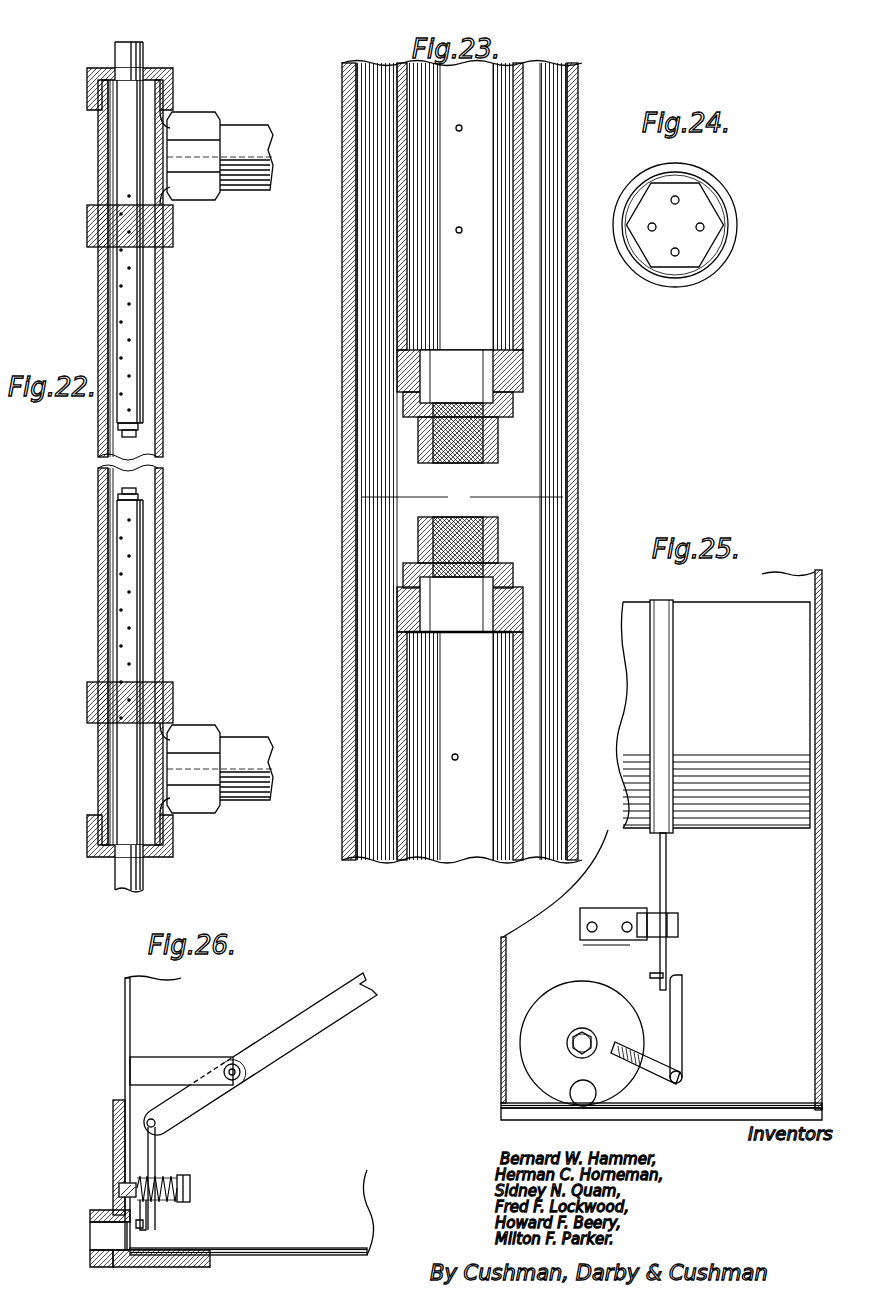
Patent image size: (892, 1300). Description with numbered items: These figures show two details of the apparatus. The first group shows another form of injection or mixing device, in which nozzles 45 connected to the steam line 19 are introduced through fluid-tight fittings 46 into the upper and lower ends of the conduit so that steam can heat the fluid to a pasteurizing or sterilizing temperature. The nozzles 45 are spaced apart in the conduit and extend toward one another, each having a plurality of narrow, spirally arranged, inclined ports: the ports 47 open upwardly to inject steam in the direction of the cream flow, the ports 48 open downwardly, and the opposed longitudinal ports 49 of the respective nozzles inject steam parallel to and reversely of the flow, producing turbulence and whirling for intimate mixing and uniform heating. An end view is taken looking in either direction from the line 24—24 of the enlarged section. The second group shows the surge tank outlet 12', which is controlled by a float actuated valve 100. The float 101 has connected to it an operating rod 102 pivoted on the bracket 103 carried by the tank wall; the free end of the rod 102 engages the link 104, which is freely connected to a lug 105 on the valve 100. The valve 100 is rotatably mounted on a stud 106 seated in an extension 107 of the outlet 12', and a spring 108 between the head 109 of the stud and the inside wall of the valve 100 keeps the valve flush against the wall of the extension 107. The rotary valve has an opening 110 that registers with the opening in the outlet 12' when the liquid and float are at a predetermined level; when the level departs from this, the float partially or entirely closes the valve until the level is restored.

In FIG. 22, the steam line 19 is at (125, 52).
In FIG. 22, the fluid-tight fittings 46 is at (168, 74).
In FIG. 22, the nozzles 45 is at (143, 497).
In FIG. 23, the nozzles 45 is at (525, 327).
In FIG. 24, the nozzles 45 is at (676, 287).
In FIG. 23, the ports 47 is at (520, 170).
In FIG. 23, the ports 48 is at (403, 213).
In FIG. 23, the longitudinal ports 49 is at (480, 517).
In FIG. 24, the longitudinal ports 49 is at (657, 229).
In FIG. 23, the line 24— 24 is at (463, 496).
In FIG. 25, the float 101 is at (713, 716).
In FIG. 25, the operating rod 102 is at (666, 856).
In FIG. 26, the operating rod 102 is at (287, 1046).
In FIG. 25, the bracket 103 is at (608, 916).
In FIG. 26, the bracket 103 is at (176, 1063).
In FIG. 25, the link 104 is at (672, 1028).
In FIG. 26, the link 104 is at (156, 1155).
In FIG. 25, the lug 105 is at (683, 1077).
In FIG. 25, the float actuated valve 100 is at (582, 1043).
In FIG. 26, the float actuated valve 100 is at (119, 1186).
In FIG. 25, the opening 110 is at (575, 1084).
In FIG. 26, the opening 110 is at (125, 1257).
In FIG. 26, the bolt or stud 106 is at (175, 1178).
In FIG. 26, the head 109 is at (213, 1185).
In FIG. 26, the extension 107 is at (115, 1164).
In FIG. 26, the spring 108 is at (160, 1206).
In FIG. 26, the outlet 12' is at (91, 1238).